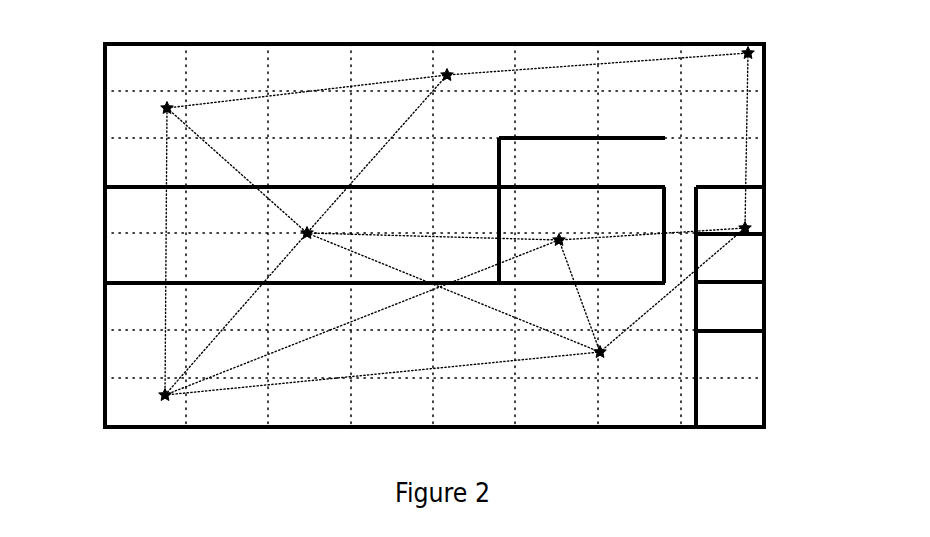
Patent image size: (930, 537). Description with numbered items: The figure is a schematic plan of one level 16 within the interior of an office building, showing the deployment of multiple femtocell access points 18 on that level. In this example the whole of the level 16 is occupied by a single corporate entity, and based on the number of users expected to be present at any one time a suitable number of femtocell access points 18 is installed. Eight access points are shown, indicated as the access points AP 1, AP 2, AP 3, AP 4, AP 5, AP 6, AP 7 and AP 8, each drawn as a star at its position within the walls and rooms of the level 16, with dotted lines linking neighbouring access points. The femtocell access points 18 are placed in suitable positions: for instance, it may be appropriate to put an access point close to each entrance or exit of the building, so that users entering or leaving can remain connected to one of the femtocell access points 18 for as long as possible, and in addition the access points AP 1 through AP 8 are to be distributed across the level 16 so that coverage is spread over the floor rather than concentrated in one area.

The level 16 is at (766, 118).
The femtocell access point 18 is at (447, 72).
The femtocell access point AP1 1 is at (157, 407).
The femtocell access point AP2 2 is at (611, 368).
The femtocell access point AP3 3 is at (737, 243).
The femtocell access point AP4 4 is at (570, 254).
The femtocell access point AP5 5 is at (317, 248).
The femtocell access point AP6 6 is at (157, 121).
The femtocell access point AP7 7 is at (458, 89).
The femtocell access point AP8 8 is at (726, 66).